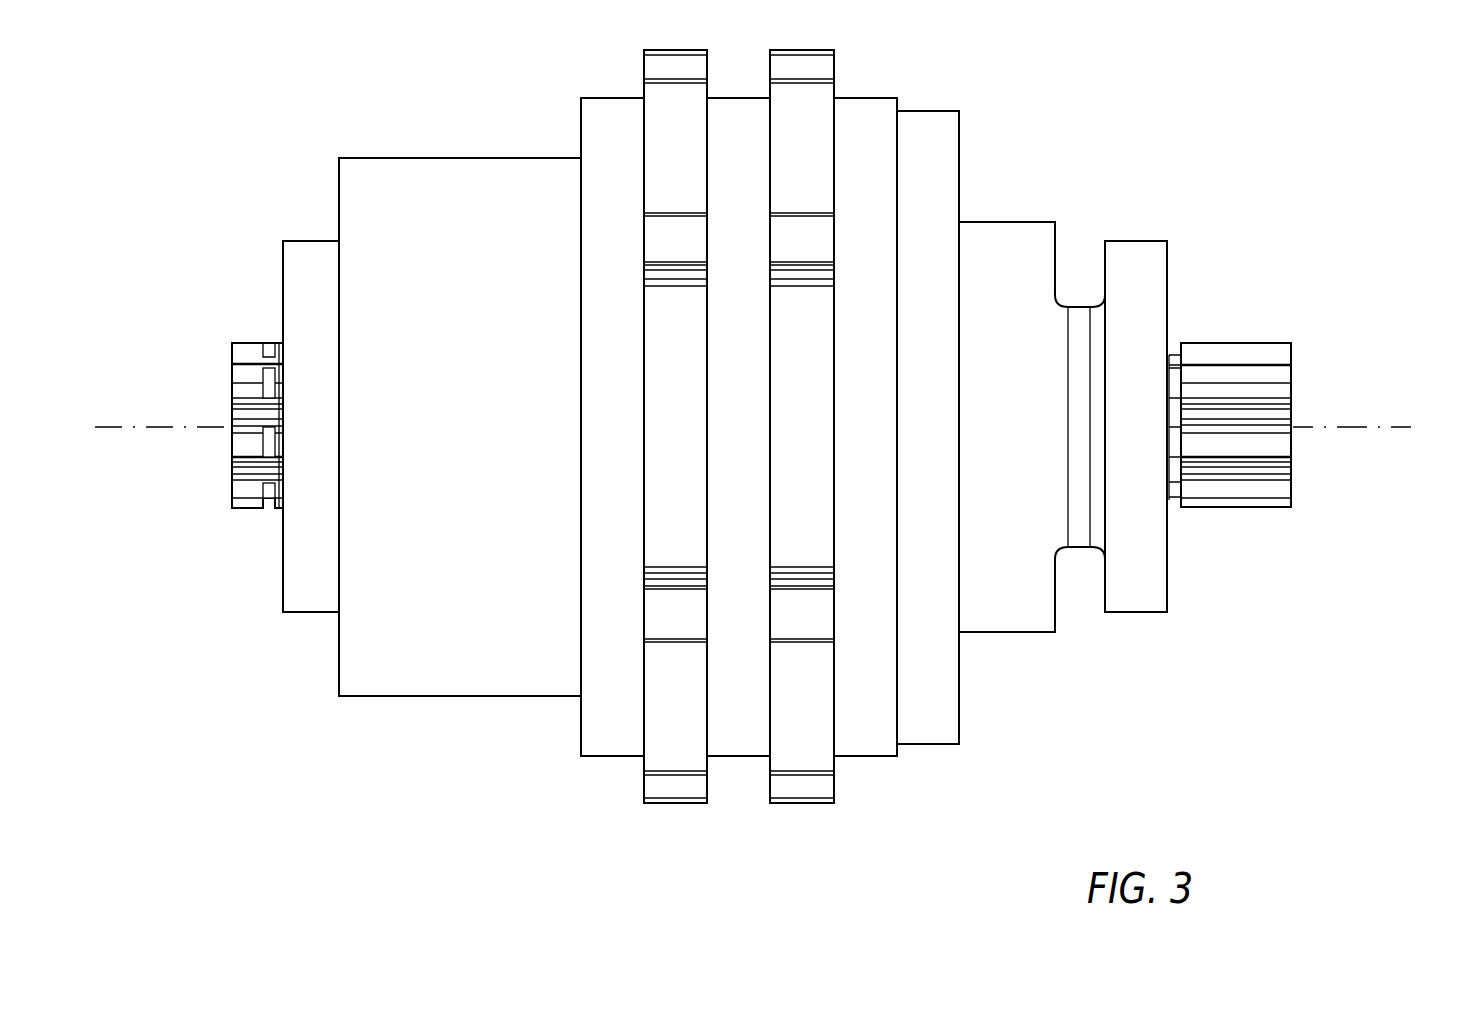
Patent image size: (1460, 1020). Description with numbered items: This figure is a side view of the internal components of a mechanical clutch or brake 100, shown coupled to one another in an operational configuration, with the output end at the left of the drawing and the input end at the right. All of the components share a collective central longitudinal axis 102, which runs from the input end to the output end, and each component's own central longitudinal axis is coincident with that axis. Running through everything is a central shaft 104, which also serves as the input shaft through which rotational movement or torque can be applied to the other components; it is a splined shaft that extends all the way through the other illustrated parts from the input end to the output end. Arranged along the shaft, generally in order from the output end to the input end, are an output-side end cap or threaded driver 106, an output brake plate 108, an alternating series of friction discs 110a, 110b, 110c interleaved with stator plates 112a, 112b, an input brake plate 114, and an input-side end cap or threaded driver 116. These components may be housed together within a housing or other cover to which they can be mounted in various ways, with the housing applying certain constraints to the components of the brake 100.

The mechanical brake 100 is at (236, 70).
The central longitudinal axis 102 is at (167, 427).
The central shaft 104 is at (255, 355).
The output-side end cap or threaded driver 106 is at (313, 265).
The output brake plate 108 is at (460, 200).
The friction disc 110a is at (617, 723).
The friction disc 110b is at (740, 706).
The friction disc 110c is at (859, 725).
The stator plate 112a is at (675, 733).
The stator plate 112b is at (797, 720).
The input brake plate 114 is at (927, 130).
The input-side end cap or threaded driver 116 is at (1135, 260).